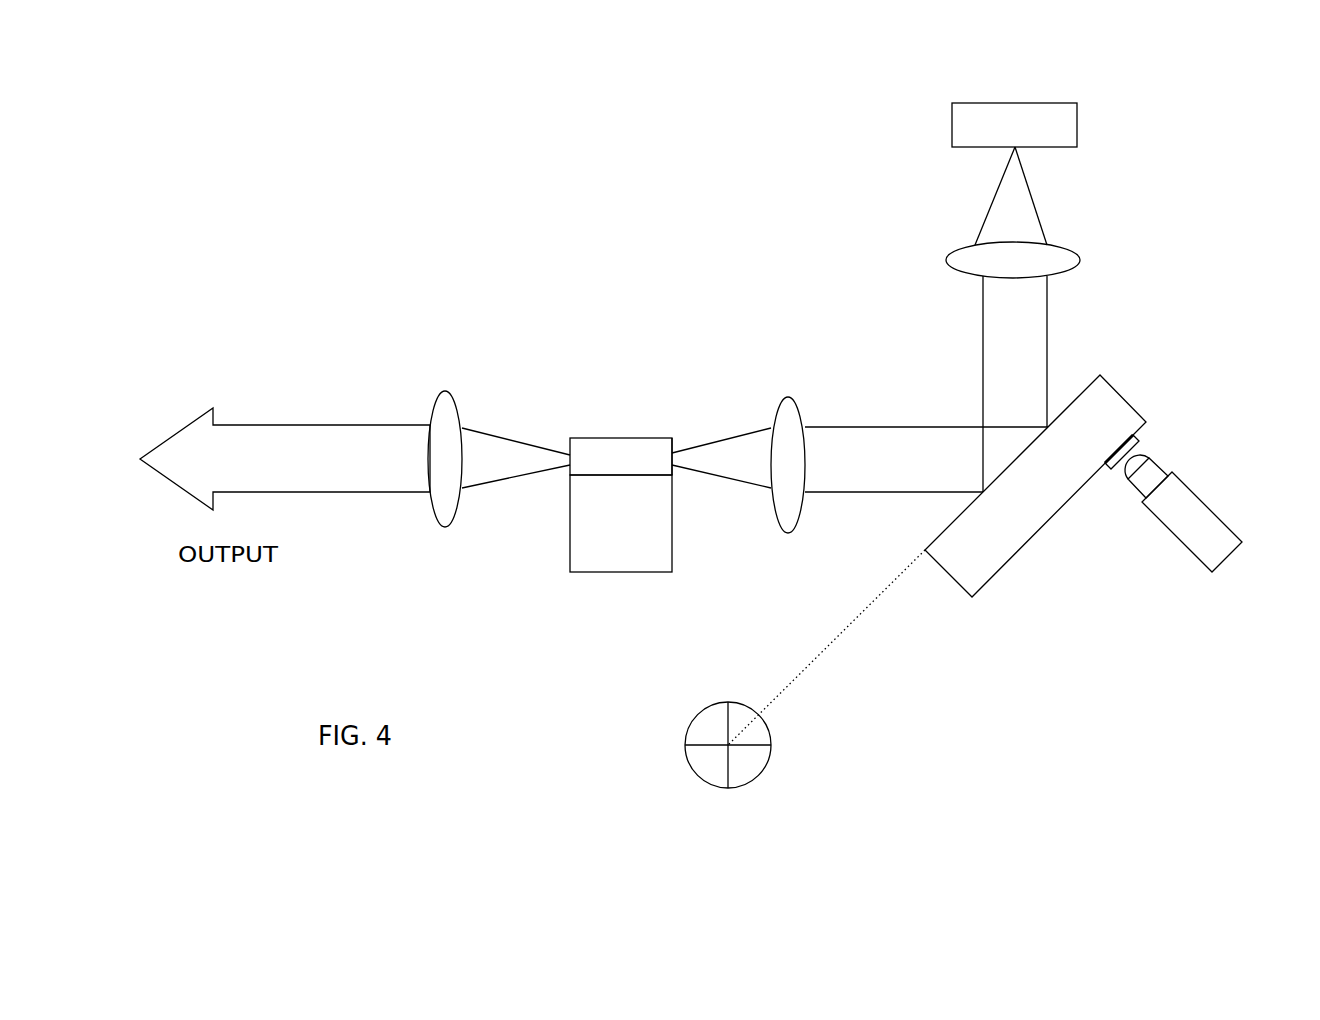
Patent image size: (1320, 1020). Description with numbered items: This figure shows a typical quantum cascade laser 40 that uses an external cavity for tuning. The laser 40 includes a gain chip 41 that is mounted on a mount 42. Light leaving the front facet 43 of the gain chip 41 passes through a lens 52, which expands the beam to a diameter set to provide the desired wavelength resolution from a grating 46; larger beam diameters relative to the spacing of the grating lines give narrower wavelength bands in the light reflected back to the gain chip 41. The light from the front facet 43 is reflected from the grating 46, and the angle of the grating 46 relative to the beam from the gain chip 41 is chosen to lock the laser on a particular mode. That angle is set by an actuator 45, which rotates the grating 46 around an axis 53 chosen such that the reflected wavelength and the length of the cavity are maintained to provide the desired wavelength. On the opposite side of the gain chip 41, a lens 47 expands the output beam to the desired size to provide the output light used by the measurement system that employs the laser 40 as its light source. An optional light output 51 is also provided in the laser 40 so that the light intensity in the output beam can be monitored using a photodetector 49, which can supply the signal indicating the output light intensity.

The laser 40 is at (372, 187).
The gain chip 41 is at (608, 445).
The mount 42 is at (578, 545).
The front facet 43 is at (668, 463).
The actuator 45 is at (1200, 508).
The grating 46 is at (1107, 398).
The lens 47 is at (450, 408).
The photodetector 49 is at (1018, 108).
The optional light output 51 is at (987, 320).
The lens 52 is at (797, 407).
The axis 53 is at (750, 773).